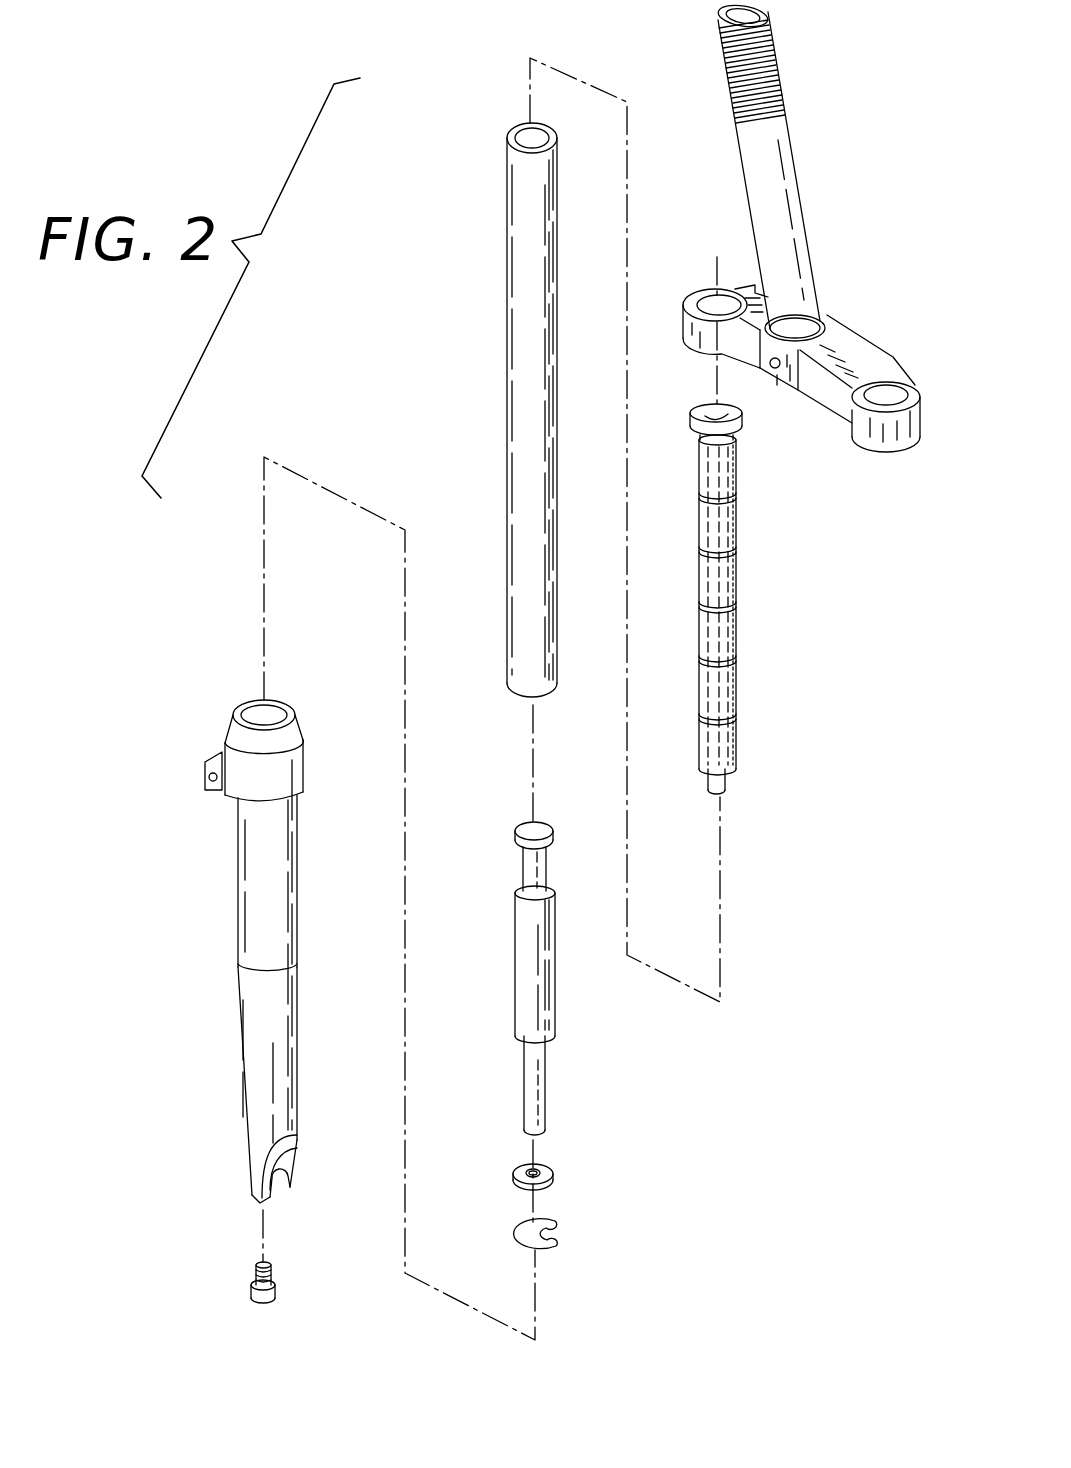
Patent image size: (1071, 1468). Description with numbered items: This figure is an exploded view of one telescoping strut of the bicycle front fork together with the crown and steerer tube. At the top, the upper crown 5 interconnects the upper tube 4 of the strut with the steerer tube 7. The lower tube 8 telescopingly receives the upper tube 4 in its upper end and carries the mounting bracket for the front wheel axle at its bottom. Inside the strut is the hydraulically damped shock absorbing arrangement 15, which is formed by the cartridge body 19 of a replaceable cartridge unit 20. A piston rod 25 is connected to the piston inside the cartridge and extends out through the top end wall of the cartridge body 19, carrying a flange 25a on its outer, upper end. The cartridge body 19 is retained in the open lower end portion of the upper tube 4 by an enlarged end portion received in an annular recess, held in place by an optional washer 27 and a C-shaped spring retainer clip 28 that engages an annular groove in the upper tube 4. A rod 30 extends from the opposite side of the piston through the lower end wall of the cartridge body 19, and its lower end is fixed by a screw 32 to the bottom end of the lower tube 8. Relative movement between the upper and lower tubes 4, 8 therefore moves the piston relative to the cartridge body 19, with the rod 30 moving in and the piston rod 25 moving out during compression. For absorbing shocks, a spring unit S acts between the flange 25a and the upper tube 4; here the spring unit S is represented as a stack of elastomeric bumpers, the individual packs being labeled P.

The upper tube 4 is at (507, 470).
The upper crown 5 is at (833, 347).
The steerer tube 7 is at (778, 214).
The lower tube 8 is at (253, 865).
The hydraulically damped shock absorbing arrangement 15 is at (566, 1008).
The cartridge body 19 is at (515, 995).
The replaceable cartridge unit 20 is at (560, 982).
The piston rod 25 is at (547, 858).
The flange 25a is at (528, 827).
The washer 27 is at (553, 1173).
The C-shaped spring retainer clip 28 is at (578, 1230).
The rod 30 is at (543, 1082).
The screw 32 is at (250, 1287).
The spring pack P is at (702, 469).
The spring unit S is at (764, 455).